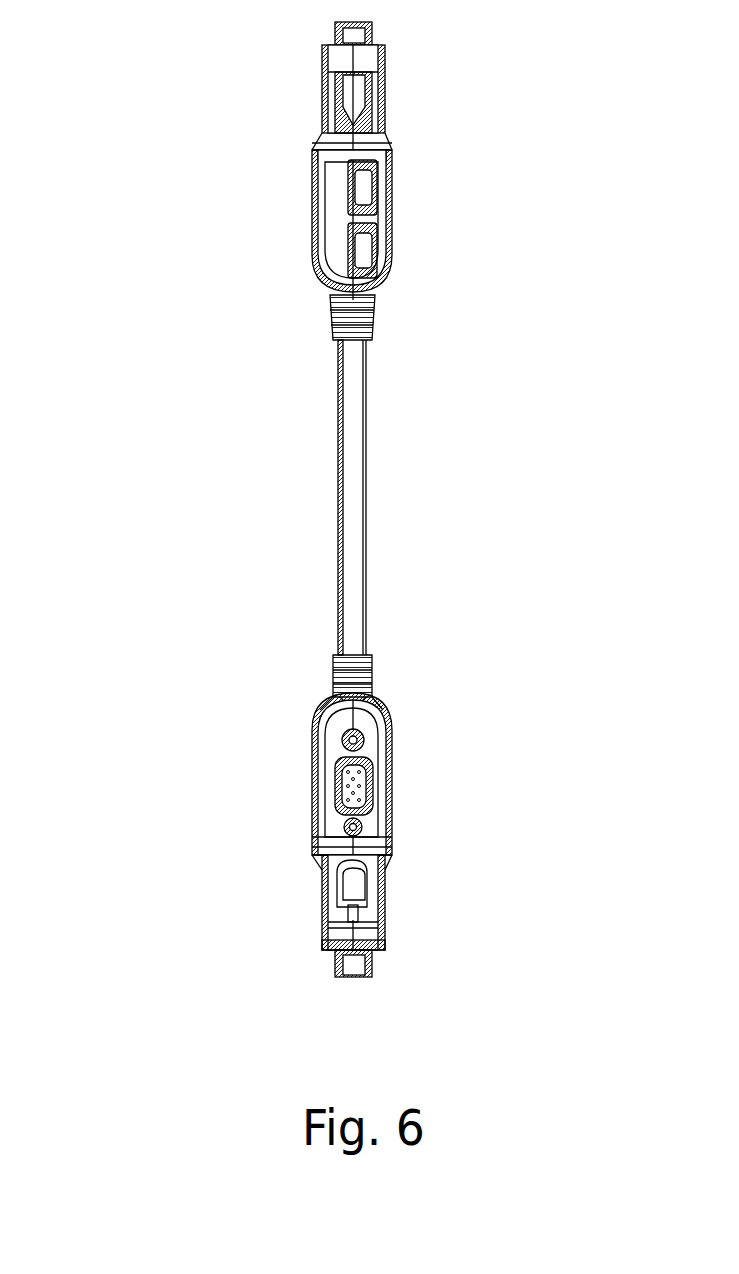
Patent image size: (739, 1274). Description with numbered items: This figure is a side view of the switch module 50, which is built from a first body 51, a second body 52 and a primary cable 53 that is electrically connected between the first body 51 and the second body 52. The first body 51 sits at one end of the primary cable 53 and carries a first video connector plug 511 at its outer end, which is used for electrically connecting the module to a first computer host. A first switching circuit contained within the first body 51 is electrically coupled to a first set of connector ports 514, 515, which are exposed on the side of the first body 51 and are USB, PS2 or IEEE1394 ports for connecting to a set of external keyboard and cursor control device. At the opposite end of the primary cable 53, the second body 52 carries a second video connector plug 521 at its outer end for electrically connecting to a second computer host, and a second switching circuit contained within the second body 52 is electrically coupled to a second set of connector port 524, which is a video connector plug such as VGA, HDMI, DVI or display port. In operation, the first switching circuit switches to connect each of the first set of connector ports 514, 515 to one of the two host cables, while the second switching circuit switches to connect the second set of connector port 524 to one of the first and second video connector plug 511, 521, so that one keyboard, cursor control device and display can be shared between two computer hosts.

The switch module 50 is at (203, 815).
The first body 51 is at (382, 215).
The first video connector plug 511 is at (355, 98).
The first set of connector ports 514 is at (347, 189).
The first set of connector ports 515 is at (347, 264).
The second body 52 is at (368, 713).
The second video connector plug 521 is at (357, 906).
The second set of connector port 524 is at (368, 790).
The primary cable 53 is at (357, 522).